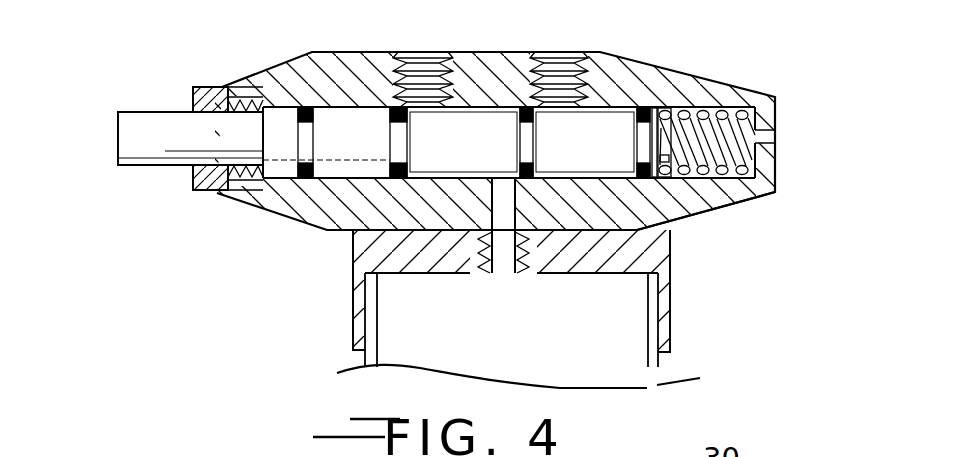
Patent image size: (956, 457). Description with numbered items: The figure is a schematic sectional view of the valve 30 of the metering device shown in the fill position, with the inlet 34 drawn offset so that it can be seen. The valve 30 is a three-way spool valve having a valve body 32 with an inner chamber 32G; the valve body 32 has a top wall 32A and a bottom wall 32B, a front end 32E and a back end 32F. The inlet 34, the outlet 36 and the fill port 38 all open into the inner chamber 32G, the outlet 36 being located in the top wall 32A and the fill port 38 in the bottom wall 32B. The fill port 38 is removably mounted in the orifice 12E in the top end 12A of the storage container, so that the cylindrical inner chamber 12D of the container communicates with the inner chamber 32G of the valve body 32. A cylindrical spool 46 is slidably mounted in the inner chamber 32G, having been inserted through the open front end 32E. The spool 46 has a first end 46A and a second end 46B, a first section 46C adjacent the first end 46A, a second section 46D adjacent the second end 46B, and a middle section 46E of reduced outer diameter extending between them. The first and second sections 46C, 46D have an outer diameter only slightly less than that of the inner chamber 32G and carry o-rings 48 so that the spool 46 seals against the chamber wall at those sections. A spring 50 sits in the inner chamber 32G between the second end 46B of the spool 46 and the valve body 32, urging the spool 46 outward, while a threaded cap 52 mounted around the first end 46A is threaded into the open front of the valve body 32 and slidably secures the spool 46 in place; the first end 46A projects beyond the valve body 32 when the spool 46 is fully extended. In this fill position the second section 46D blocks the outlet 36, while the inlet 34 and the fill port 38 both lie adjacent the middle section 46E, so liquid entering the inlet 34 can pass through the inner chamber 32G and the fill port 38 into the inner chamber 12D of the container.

The valve 30 is at (450, 147).
The valve body 32 is at (281, 204).
The top wall 32A is at (472, 46).
The bottom wall 32B is at (718, 204).
The front end 32E is at (230, 188).
The back end 32F is at (775, 167).
The inner chamber 32G is at (373, 187).
The inlet 34 is at (427, 55).
The outlet 36 is at (581, 57).
The fill port 38 is at (492, 216).
The spool 46 is at (361, 116).
The first end 46A is at (130, 163).
The second end 46B is at (630, 117).
The first section 46C is at (333, 120).
The second section 46D is at (610, 155).
The middle section 46E is at (497, 155).
The o-rings 48 is at (650, 110).
The spring 50 is at (750, 127).
The threaded cap 52 is at (190, 98).
The top end 12A is at (667, 255).
The inner chamber 12D is at (632, 319).
The orifice 12E is at (503, 273).